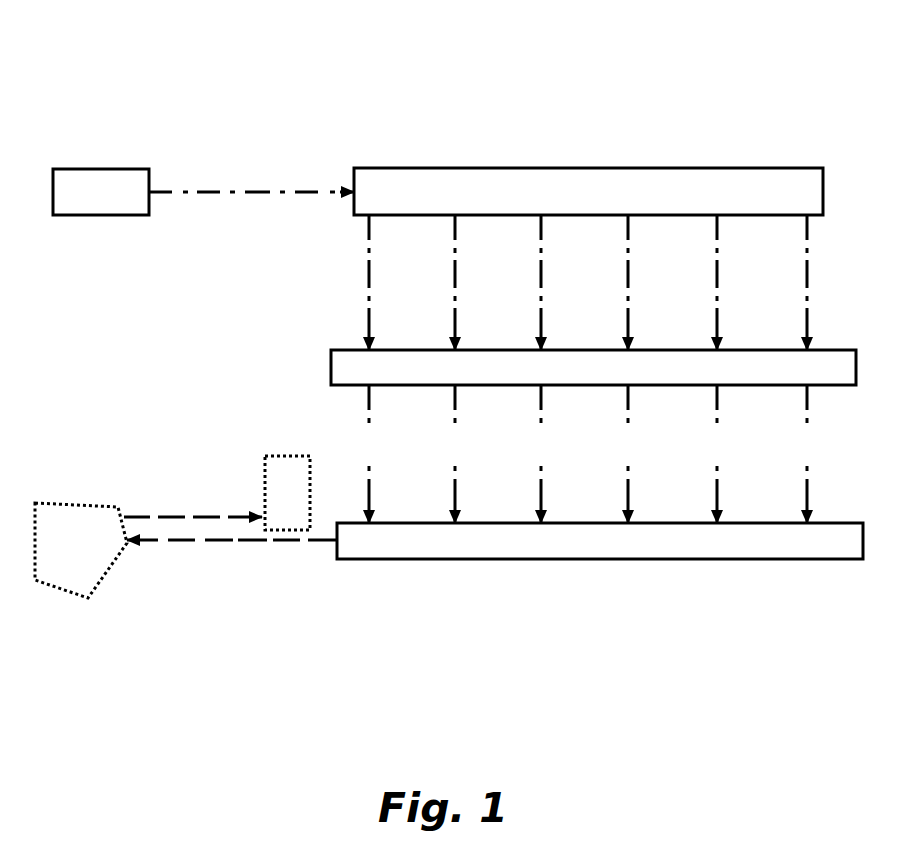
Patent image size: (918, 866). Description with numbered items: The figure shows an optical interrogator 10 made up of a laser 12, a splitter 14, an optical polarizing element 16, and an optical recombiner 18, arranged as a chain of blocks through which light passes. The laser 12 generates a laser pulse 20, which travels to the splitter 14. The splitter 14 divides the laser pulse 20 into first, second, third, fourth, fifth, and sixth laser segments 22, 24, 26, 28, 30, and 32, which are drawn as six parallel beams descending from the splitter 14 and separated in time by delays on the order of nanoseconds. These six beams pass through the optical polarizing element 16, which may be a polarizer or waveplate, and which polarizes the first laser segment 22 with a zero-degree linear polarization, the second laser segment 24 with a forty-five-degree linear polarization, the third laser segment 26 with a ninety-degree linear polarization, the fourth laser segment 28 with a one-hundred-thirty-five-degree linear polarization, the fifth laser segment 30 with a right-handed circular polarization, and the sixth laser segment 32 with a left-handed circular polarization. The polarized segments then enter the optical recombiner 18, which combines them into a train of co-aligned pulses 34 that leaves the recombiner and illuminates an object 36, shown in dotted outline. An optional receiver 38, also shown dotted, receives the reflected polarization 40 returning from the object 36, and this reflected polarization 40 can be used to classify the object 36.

The optical interrogator 10 is at (124, 77).
The laser 12 is at (127, 215).
The splitter 14 is at (539, 168).
The optical polarizing element 16 is at (331, 367).
The optical recombiner 18 is at (498, 559).
The laser pulse 20 is at (248, 192).
The first laser segment 22 is at (369, 317).
The second laser segment 24 is at (455, 317).
The third laser segment 26 is at (541, 317).
The fourth laser segment 28 is at (628, 317).
The fifth laser segment 30 is at (717, 317).
The sixth laser segment 32 is at (807, 317).
The train of co-aligned pulses 34 is at (210, 542).
The object 36 is at (87, 598).
The receiver 38 is at (265, 498).
The reflected polarization 40 is at (167, 515).